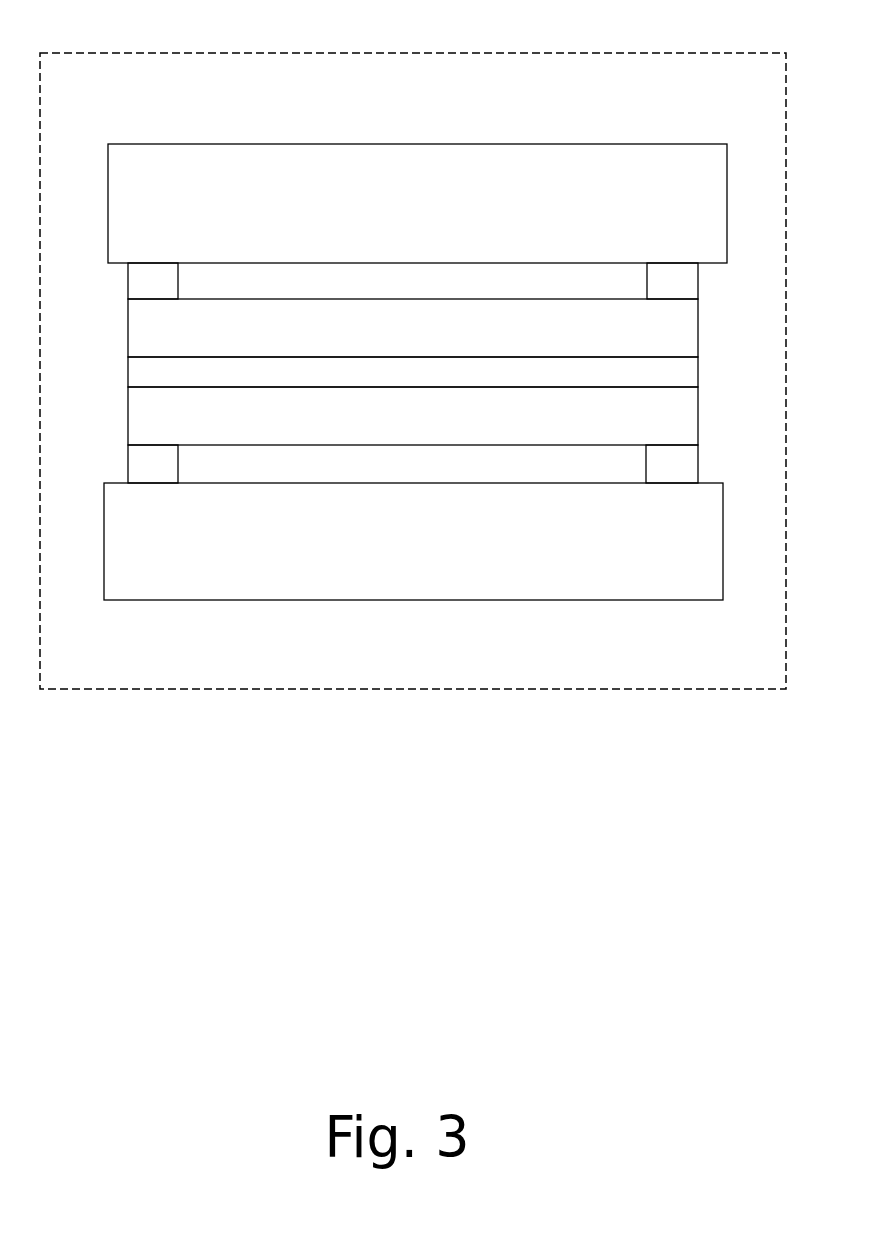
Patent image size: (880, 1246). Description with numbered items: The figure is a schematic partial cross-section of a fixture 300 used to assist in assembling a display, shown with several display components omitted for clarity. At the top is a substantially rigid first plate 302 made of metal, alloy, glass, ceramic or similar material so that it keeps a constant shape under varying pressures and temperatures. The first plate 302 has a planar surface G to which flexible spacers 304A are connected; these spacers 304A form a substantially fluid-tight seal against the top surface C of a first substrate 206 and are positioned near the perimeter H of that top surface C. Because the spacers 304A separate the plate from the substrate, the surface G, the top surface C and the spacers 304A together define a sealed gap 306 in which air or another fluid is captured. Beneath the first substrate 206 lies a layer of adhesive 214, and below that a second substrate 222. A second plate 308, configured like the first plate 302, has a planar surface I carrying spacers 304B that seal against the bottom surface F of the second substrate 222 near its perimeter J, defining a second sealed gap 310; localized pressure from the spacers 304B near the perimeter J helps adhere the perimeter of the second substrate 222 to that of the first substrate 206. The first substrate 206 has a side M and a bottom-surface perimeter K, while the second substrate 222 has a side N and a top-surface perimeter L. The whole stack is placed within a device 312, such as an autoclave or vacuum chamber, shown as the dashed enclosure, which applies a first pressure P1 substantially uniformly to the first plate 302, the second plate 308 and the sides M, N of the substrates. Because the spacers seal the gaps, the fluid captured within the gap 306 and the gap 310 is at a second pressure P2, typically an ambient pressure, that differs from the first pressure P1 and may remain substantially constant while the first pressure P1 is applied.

The fixture 300 is at (514, 131).
The first plate 302 is at (417, 203).
The spacers 304A is at (413, 281).
The spacers 304B is at (413, 464).
The gap 306 is at (408, 286).
The second plate 308 is at (413, 541).
The gap 310 is at (425, 470).
The device 312 is at (283, 53).
The first substrate 206 is at (413, 328).
The adhesive 214 is at (413, 372).
The second substrate 222 is at (413, 416).
The first pressure P1 is at (409, 369).
The second pressure P2 is at (479, 374).
The top surface C is at (565, 299).
The bottom surface F is at (630, 445).
The surface G is at (255, 263).
The perimeter H is at (128, 299).
The surface I is at (192, 483).
The perimeter J is at (128, 445).
The perimeter K is at (128, 357).
The perimeter L is at (128, 387).
The side M is at (128, 329).
The side N is at (698, 423).